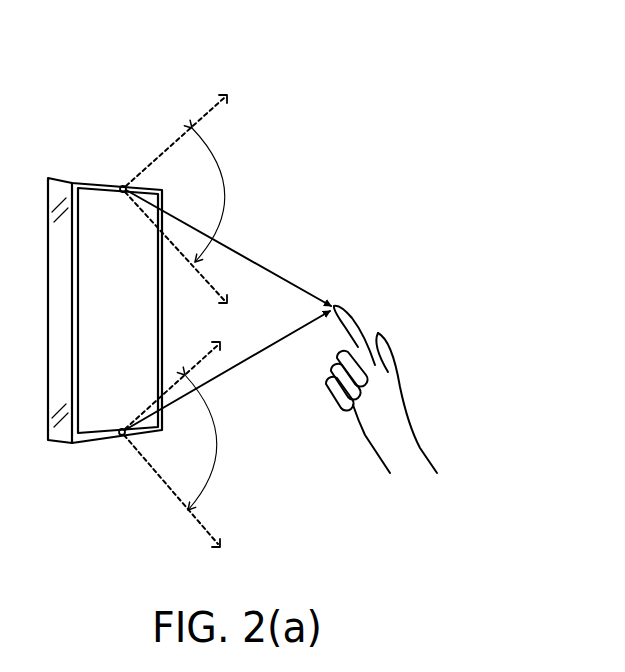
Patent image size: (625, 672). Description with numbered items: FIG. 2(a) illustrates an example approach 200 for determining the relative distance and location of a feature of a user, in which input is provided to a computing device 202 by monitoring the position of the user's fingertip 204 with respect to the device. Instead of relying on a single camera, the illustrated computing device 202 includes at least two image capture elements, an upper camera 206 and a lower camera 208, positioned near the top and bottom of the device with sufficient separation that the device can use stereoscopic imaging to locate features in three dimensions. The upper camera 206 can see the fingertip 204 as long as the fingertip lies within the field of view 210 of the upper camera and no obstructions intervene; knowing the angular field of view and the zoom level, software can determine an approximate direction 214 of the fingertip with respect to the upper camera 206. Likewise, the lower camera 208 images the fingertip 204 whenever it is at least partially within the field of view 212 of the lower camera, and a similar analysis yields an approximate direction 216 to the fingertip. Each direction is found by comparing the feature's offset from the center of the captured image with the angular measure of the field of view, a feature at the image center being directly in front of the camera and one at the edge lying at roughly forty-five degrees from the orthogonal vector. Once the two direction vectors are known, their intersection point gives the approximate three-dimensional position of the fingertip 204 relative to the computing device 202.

The touch input system 200 is at (557, 103).
The computing device 202 is at (88, 178).
The fingertip 204 is at (353, 304).
The upper camera 206 is at (127, 183).
The lower camera 208 is at (122, 432).
The field of view of the upper camera 210 is at (200, 120).
The field of view of the lower camera 212 is at (168, 483).
The approximate direction 214 is at (258, 262).
The approximate direction 216 is at (247, 363).